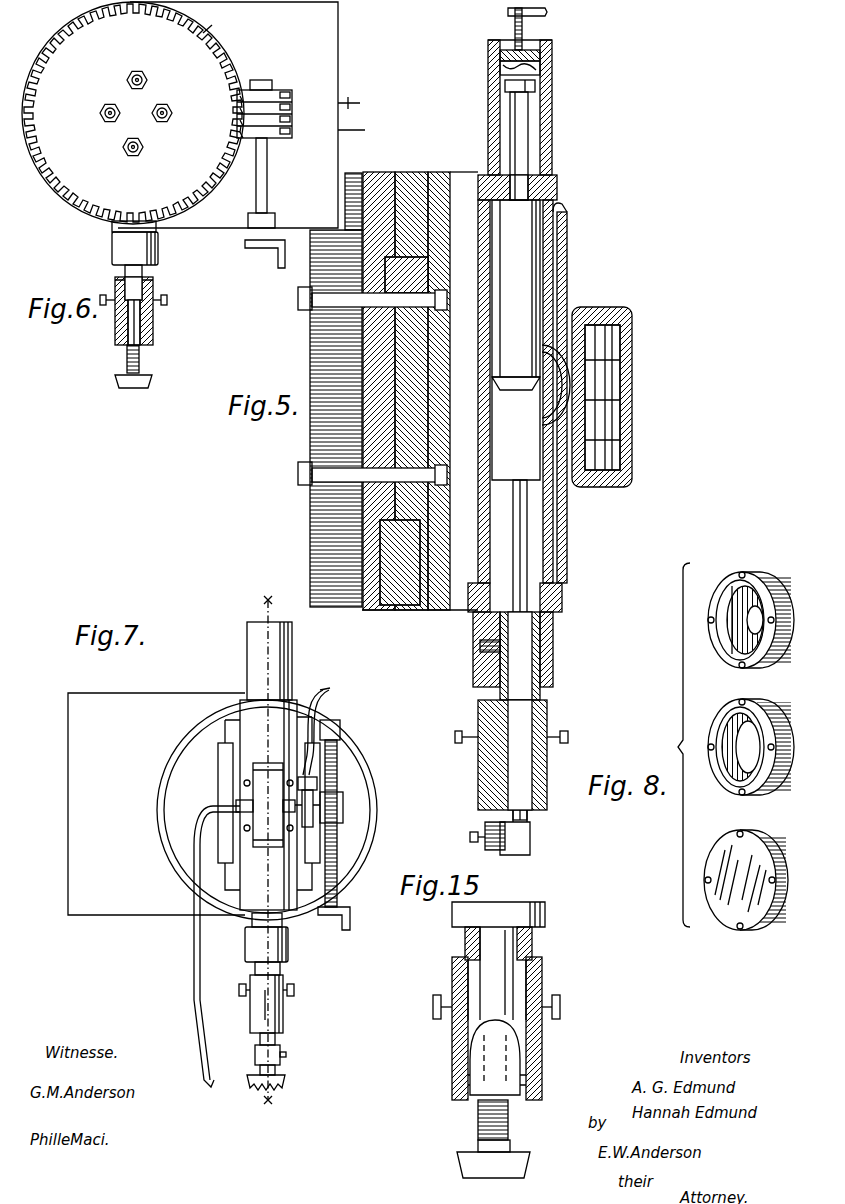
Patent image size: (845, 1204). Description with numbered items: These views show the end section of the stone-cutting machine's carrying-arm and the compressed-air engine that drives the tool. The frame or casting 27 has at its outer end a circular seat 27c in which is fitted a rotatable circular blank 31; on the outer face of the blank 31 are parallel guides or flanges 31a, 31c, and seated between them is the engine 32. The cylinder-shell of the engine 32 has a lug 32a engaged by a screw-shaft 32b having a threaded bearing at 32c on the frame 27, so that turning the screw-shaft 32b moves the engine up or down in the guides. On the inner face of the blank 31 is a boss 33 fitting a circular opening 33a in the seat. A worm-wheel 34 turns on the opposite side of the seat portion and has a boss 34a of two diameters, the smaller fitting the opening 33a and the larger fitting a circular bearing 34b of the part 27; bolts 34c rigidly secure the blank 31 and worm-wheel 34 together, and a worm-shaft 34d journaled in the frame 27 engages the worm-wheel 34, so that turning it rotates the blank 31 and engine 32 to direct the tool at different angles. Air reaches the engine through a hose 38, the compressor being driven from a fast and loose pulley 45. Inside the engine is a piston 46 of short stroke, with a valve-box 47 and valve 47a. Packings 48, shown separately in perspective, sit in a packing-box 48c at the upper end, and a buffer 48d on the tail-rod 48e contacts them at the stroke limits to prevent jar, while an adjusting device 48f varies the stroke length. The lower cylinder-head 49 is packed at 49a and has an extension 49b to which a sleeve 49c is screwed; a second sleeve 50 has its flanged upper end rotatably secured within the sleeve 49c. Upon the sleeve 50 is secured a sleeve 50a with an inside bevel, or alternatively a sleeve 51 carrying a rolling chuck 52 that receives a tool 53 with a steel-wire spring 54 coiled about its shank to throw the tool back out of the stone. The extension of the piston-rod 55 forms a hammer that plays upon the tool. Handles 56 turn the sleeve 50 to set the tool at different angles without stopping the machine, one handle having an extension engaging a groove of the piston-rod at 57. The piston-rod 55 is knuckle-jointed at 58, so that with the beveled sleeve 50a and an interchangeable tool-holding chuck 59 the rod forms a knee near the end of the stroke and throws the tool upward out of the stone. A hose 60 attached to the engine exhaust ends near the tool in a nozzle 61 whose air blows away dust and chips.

In FIG. 6, the end section frame 27 is at (280, 45).
In FIG. 5, the end section frame 27 is at (418, 172).
In FIG. 6, the circular seat 27c is at (245, 30).
In FIG. 5, the circular seat 27c is at (440, 172).
In FIG. 5, the circular blank 31 is at (450, 394).
In FIG. 5, the parallel guides or flanges 31a is at (466, 447).
In FIG. 7, the parallel guides or flanges 31a is at (218, 785).
In FIG. 7, the sleeve guide bar 31c is at (320, 840).
In FIG. 5, the engine 32 is at (618, 259).
In FIG. 7, the engine 32 is at (268, 805).
In FIG. 7, the lug 32a is at (340, 727).
In FIG. 7, the screw-shaft 32b is at (337, 770).
In FIG. 7, the threaded bearing 32c is at (378, 823).
In FIG. 5, the boss 33 is at (426, 290).
In FIG. 5, the circular opening 33a is at (408, 260).
In FIG. 6, the worm-wheel 34 is at (133, 113).
In FIG. 5, the worm-wheel 34 is at (310, 530).
In FIG. 5, the boss of two diameters 34a is at (396, 255).
In FIG. 5, the circular bearing 34b is at (370, 205).
In FIG. 6, the bolts 34c is at (125, 79).
In FIG. 5, the bolts 34c is at (300, 308).
In FIG. 6, the worm-shaft 34d is at (280, 140).
In FIG. 7, the hose 38 is at (332, 695).
In FIG. 5, the fast and loose pulley 45 is at (356, 103).
In FIG. 5, the piston 46 is at (515, 391).
In FIG. 5, the valve-box 47 is at (632, 394).
In FIG. 7, the valve-box 47 is at (265, 805).
In FIG. 5, the valve 47a is at (546, 392).
In FIG. 5, the packings 48 is at (540, 73).
In FIG. 8, the packings 48 is at (749, 746).
In FIG. 5, the packing-box 48c is at (552, 107).
In FIG. 5, the buffer 48d is at (540, 89).
In FIG. 5, the tail-rod 48e is at (532, 136).
In FIG. 5, the adjusting device 48f is at (522, 25).
In FIG. 5, the lower cylinder-head 49 is at (567, 553).
In FIG. 5, the packing 49a is at (562, 590).
In FIG. 6, the extension 49b is at (112, 232).
In FIG. 5, the extension 49b is at (553, 625).
In FIG. 7, the extension 49b is at (252, 920).
In FIG. 6, the sleeve 49c is at (158, 249).
In FIG. 5, the sleeve 49c is at (553, 657).
In FIG. 7, the sleeve 49c is at (322, 672).
In FIG. 15, the sleeve 49c is at (545, 922).
In FIG. 6, the second sleeve 50 is at (142, 272).
In FIG. 5, the second sleeve 50 is at (547, 700).
In FIG. 7, the second sleeve 50 is at (280, 968).
In FIG. 15, the second sleeve 50 is at (532, 946).
In FIG. 5, the sleeve 50a is at (588, 733).
In FIG. 6, the sleeve 51 is at (155, 322).
In FIG. 15, the sleeve 51 is at (542, 974).
In FIG. 6, the rolling chuck 52 is at (140, 345).
In FIG. 15, the rolling chuck 52 is at (520, 1065).
In FIG. 6, the tool 53 is at (152, 384).
In FIG. 5, the tool 53 is at (512, 650).
In FIG. 15, the tool 53 is at (530, 1168).
In FIG. 6, the steel-wire spring 54 is at (127, 357).
In FIG. 15, the steel-wire spring 54 is at (508, 1120).
In FIG. 6, the piston-rod 55 is at (150, 291).
In FIG. 5, the handles 56 is at (455, 738).
In FIG. 7, the handles 56 is at (294, 990).
In FIG. 5, the handle extension engagement 57 is at (486, 715).
In FIG. 5, the knuckle-joint 58 is at (476, 825).
In FIG. 5, the tool-holding chuck 59 is at (530, 845).
In FIG. 7, the tool-holding chuck 59 is at (255, 1046).
In FIG. 7, the hose 60 is at (217, 946).
In FIG. 7, the nozzle 61 is at (247, 1080).